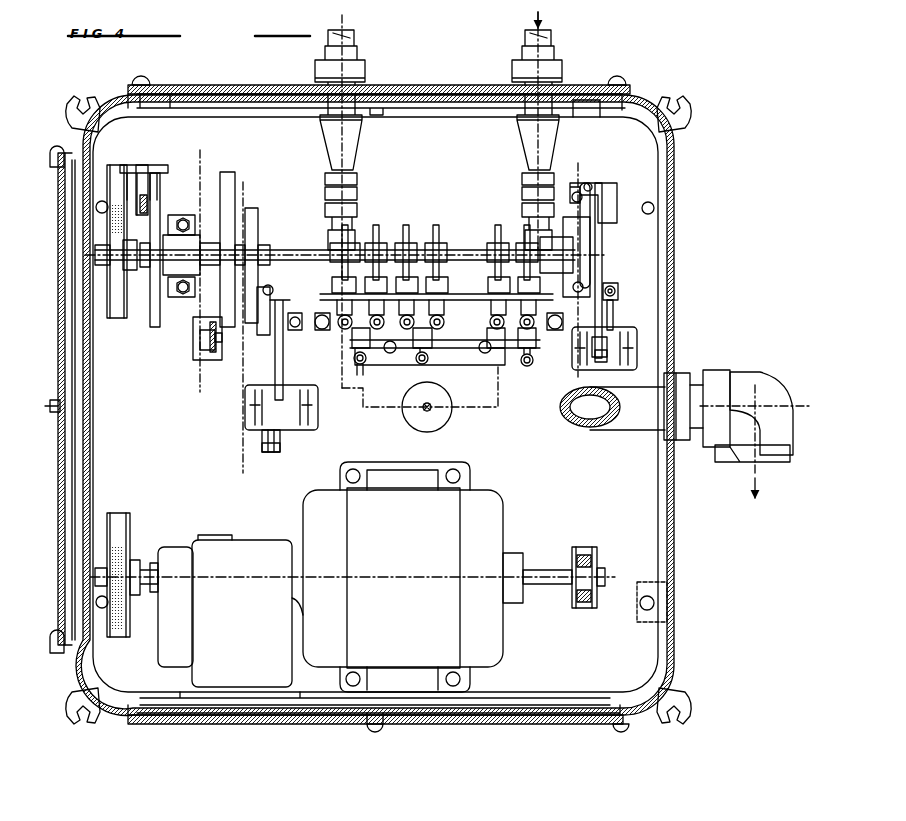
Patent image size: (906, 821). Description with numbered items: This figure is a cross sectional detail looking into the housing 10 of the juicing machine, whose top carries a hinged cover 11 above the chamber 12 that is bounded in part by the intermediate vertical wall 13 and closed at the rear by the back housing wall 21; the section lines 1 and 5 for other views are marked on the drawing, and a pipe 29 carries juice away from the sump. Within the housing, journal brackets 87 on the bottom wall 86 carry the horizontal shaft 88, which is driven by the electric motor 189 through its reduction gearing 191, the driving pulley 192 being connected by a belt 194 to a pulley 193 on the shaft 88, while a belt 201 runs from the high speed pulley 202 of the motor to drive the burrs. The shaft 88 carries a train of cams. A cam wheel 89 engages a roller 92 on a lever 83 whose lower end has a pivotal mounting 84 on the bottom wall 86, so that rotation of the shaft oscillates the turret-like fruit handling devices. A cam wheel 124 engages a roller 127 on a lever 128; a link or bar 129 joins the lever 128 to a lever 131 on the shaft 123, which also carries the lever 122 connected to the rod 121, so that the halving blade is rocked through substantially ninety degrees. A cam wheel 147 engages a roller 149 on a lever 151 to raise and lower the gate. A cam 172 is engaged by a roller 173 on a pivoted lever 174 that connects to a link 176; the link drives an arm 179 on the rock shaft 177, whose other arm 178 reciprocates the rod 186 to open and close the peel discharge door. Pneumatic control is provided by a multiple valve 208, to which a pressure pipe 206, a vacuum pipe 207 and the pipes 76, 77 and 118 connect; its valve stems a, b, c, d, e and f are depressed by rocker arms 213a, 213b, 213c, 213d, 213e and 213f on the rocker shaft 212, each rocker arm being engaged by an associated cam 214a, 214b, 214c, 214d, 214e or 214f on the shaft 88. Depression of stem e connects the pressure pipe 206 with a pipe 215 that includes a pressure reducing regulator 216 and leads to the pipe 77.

The pipe elbow / section line I 1 is at (807, 404).
The section line 5 is at (368, 15).
The housing 10 is at (143, 345).
The hinged cover 11 is at (220, 150).
The chamber 12 is at (262, 182).
The intermediate vertical wall 13 is at (602, 163).
The back housing wall 21 is at (675, 262).
The pipe 29 is at (637, 430).
The pipe 76 is at (418, 360).
The pipe 77 is at (364, 362).
The lever 83 is at (214, 325).
The pivotal mounting 84 is at (200, 335).
The bottom wall 86 is at (650, 480).
The journal brackets 87 is at (180, 215).
The horizontal shaft 88 is at (287, 250).
The cam wheel 89 is at (232, 170).
The roller 92 is at (222, 336).
The pipe 118 is at (532, 370).
The rod 121 is at (296, 314).
The lever 122 is at (290, 372).
The shaft 123 is at (250, 407).
The cam wheel 124 is at (262, 205).
The roller 127 is at (263, 325).
The lever 128 is at (272, 290).
The link or bar 129 is at (277, 452).
The lever 131 is at (282, 437).
The cam wheel 147 is at (158, 307).
The roller 149 is at (143, 192).
The lever 151 is at (147, 203).
The cam 172 is at (593, 237).
The roller 173 is at (588, 182).
The pivoted lever 174 is at (592, 203).
The link 176 is at (602, 250).
The rock shaft 177 is at (632, 345).
The arm 178 is at (615, 303).
The arm 179 is at (603, 357).
The rod 186 is at (614, 287).
The electric motor 189 is at (505, 522).
The reduction gearing 191 is at (257, 545).
The driving pulley 192 is at (130, 522).
The pulley 193 is at (107, 167).
The belt 194 is at (123, 441).
The belt 201 is at (583, 547).
The high speed pulley 202 is at (600, 560).
The pipe 206 is at (355, 40).
The pipe 207 is at (525, 40).
The multiple valve 208 is at (452, 348).
The rocker shaft 212 is at (470, 301).
The rocker arm 213a is at (343, 323).
The rocker arm 213b is at (390, 293).
The rocker arm 213c is at (420, 293).
The rocker arm 213d is at (452, 293).
The rocker arm 213e is at (513, 293).
The rocker arm 213f is at (540, 335).
The cam 214a is at (332, 223).
The cam 214b is at (375, 227).
The cam 214c is at (407, 227).
The cam 214d is at (437, 227).
The cam 214e is at (495, 230).
The cam 214f is at (526, 230).
The pipe 215 is at (502, 363).
The pressure reducing regulator 216 is at (402, 417).
The valve stem a is at (350, 341).
The valve stem b is at (382, 317).
The valve stem c is at (416, 327).
The valve stem d is at (445, 317).
The valve stem e is at (492, 327).
The valve stem f is at (524, 327).